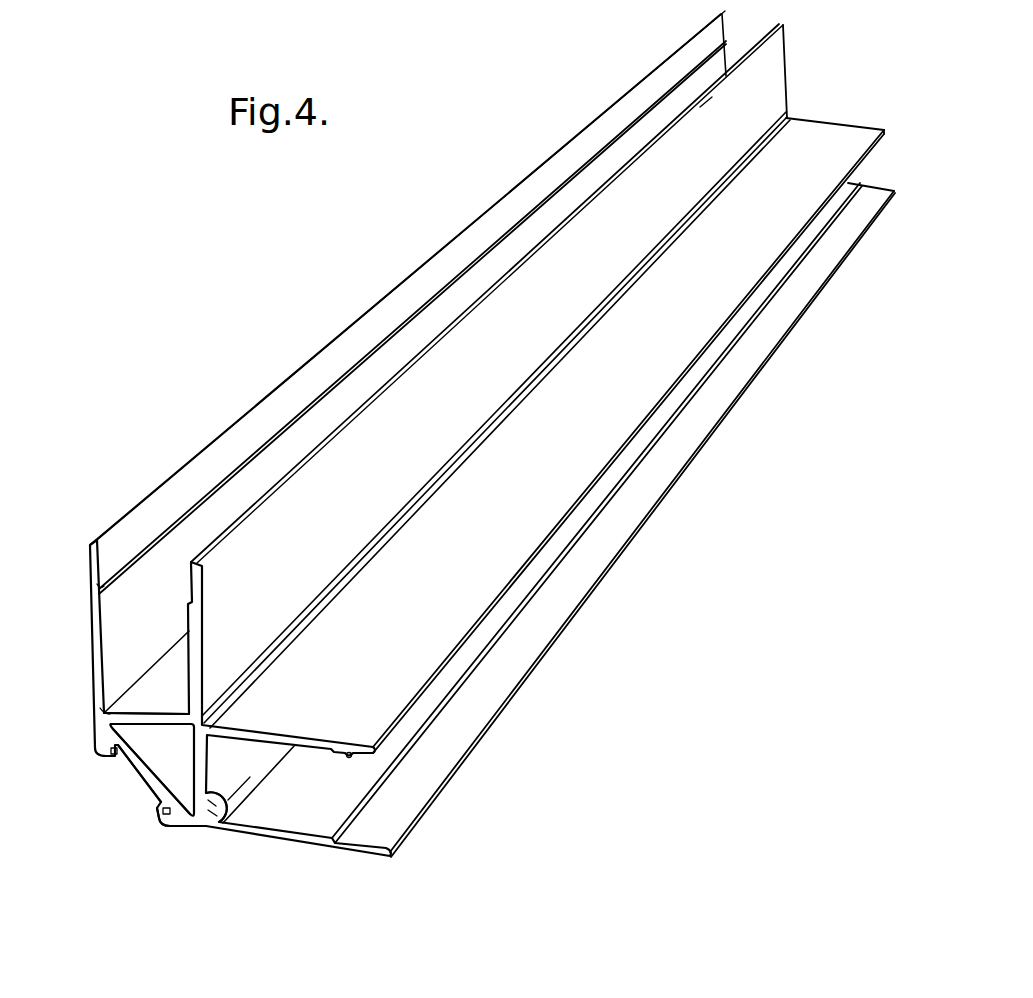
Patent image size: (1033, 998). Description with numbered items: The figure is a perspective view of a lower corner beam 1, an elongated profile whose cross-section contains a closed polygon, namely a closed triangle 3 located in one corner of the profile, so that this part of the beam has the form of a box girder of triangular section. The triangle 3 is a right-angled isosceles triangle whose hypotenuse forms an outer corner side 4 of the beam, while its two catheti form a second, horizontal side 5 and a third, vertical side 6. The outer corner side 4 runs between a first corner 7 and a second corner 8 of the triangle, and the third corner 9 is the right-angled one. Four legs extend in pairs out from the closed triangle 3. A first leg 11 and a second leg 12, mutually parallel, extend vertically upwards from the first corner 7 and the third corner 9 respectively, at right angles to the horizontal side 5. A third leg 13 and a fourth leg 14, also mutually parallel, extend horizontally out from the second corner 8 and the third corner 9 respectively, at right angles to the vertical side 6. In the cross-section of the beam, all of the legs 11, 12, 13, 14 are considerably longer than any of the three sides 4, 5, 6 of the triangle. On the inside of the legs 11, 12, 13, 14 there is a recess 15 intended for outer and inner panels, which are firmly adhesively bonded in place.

The lower corner beam 1 is at (287, 351).
The closed triangle 3 is at (179, 762).
The outer corner side 4 is at (150, 778).
The second, horizontal side 5 is at (138, 717).
The third, vertical side 6 is at (207, 797).
The first corner 7 is at (103, 714).
The second corner 8 is at (206, 826).
The third corner 9 is at (210, 723).
The first leg 11 is at (98, 620).
The second leg 12 is at (202, 631).
The third leg 13 is at (290, 840).
The fourth leg 14 is at (293, 740).
The recess 15 is at (186, 580).